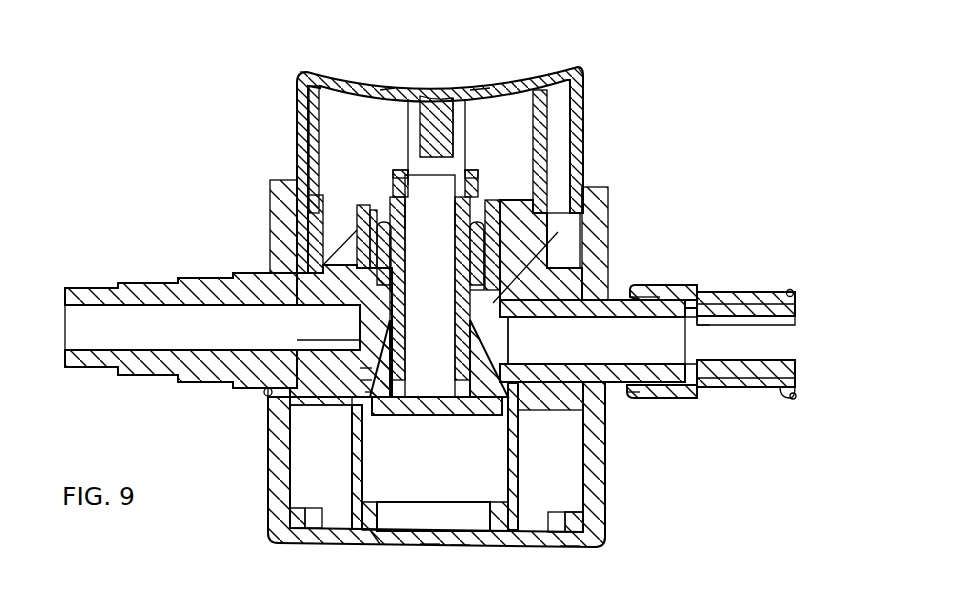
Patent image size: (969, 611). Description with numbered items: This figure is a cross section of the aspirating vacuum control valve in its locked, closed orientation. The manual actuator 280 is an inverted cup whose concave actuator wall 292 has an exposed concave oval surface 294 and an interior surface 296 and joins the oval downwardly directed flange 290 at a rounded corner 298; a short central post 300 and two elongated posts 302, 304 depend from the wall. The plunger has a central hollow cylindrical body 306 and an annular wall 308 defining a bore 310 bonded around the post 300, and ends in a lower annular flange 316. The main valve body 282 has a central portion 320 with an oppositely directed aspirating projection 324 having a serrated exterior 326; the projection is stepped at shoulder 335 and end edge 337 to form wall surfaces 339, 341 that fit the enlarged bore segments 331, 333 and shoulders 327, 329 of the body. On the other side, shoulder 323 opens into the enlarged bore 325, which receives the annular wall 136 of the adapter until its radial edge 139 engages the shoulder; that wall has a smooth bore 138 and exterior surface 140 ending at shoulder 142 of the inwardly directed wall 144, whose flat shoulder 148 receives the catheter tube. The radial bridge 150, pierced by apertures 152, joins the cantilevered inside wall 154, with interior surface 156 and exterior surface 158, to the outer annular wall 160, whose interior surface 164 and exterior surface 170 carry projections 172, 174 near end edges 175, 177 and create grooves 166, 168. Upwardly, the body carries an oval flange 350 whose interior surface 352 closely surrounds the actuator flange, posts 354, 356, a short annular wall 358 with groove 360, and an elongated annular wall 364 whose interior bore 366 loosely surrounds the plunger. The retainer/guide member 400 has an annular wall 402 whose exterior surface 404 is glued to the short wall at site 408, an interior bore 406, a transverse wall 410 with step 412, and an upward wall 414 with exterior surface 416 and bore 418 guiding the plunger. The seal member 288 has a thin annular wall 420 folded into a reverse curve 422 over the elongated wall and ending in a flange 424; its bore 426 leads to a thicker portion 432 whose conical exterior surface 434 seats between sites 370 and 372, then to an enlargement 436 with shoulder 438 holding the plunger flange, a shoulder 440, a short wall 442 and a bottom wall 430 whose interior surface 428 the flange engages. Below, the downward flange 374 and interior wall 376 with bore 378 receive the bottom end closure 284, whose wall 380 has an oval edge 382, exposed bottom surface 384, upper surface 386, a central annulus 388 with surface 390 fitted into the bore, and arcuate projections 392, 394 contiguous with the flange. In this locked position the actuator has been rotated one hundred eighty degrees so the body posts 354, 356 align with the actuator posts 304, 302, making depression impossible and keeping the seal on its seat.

The manual actuator 280 is at (362, 92).
The interior surface 296 is at (356, 72).
The exposed concave oval surface 294 is at (380, 86).
The concave actuator wall 292 is at (514, 85).
The rounded oval corner 298 is at (580, 68).
The elongated cylindrical post 302 is at (312, 130).
The downwardly directed continuous flange 290 is at (300, 100).
The elongated cylindrical post 304 is at (548, 108).
The cylindrical post 300 is at (440, 96).
The annular wall 308 is at (437, 100).
The cylindrical bore 310 is at (458, 125).
The shoulder or step 412 is at (395, 185).
The exterior cylindrical surface 416 is at (395, 175).
The interior bore 418 is at (405, 172).
The annular wall 414 is at (476, 172).
The retainer/guide member 400 is at (480, 178).
The central hollow cylindrical body 306 is at (448, 318).
The transverse disc-shaped wall 410 is at (468, 192).
The annular reverse curve 422 is at (470, 210).
The annular wall 364 is at (472, 226).
The annular wall 358 is at (472, 250).
The enlarged annular flange 424 is at (470, 250).
The hollow bore 426 is at (470, 270).
The annular upper end portion 420 is at (398, 268).
The interior bore 366 is at (360, 222).
The interior bore 406 is at (368, 240).
The annular wall 402 is at (540, 230).
The exterior cylindrical surface 404 is at (500, 245).
The upwardly directed oval shaped flange 350 is at (280, 180).
The cylindrical post 354 is at (288, 228).
The shoulder 335 is at (300, 250).
The shoulder 329 is at (296, 262).
The interior surface 352 is at (590, 215).
The cylindrical post 356 is at (565, 195).
The shoulder or open groove 360 is at (365, 300).
The end edge 337 is at (400, 340).
The shoulder 323 is at (495, 410).
The lower annular flange 316 is at (470, 385).
The stepped or serrated exposed exterior 326 is at (172, 276).
The aspirating projection 324 is at (205, 295).
The enlarged bore segment 331 is at (300, 315).
The site 408 is at (350, 315).
The thicker wall portion 432 is at (358, 342).
The shoulder 327 is at (355, 358).
The reduced diameter annular wall 442 is at (360, 368).
The annular enlargement 436 is at (365, 380).
The shoulder 440 is at (368, 393).
The cylindrical wall surface 339 is at (245, 390).
The enlarged bore segment 333 is at (264, 393).
The cylindrical wall surface 341 is at (268, 400).
The central portion 320 is at (508, 300).
The site 370 is at (555, 345).
The shoulder 438 is at (522, 330).
The exterior surface 434 is at (522, 353).
The radial edge 139 is at (561, 340).
The enlarged bore 325 is at (575, 310).
The interior cylindrical smooth bore 138 is at (616, 356).
The annular wall 136 is at (628, 318).
The step or shoulder 142 is at (683, 330).
The radial bridge or web 150 is at (683, 362).
The annular cantilevered inside wall 154 is at (745, 292).
The apertures 152 is at (696, 298).
The annular wall 160 is at (680, 290).
The exterior smooth annular surface 158 is at (775, 306).
The annular groove 168 is at (795, 292).
The interior annular smooth surface 156 is at (785, 358).
The interior cylindrical surface 164 is at (785, 379).
The flat shoulder 148 is at (697, 328).
The inwardly directed annular wall 144 is at (695, 358).
The annular projection 172 is at (630, 285).
The end edge 175 is at (622, 288).
The annular groove 166 is at (628, 392).
The exterior cylindrical smooth surface 140 is at (615, 395).
The exterior annular smooth surface 170 is at (718, 390).
The annular projection 174 is at (788, 400).
The end edge 177 is at (796, 399).
The exterior flange 374 is at (270, 470).
The main valve body 282 is at (607, 440).
The oval shaped edge 382 is at (605, 542).
The interior annular wall 376 is at (352, 428).
The site 372 is at (350, 410).
The interior bore 378 is at (518, 440).
The arcuate wall projection 392 is at (297, 510).
The surface 390 is at (528, 512).
The arcuate wall projection 394 is at (572, 508).
The central annulus 388 is at (440, 525).
The bottom disc shaped wall 430 is at (415, 418).
The interior surface 428 is at (438, 418).
The cup-shaped seal member 288 is at (450, 420).
The upper surface 386 is at (396, 530).
The flat exposed bottom surface 384 is at (448, 545).
The wall 380 is at (462, 546).
The bottom end closure 284 is at (575, 548).